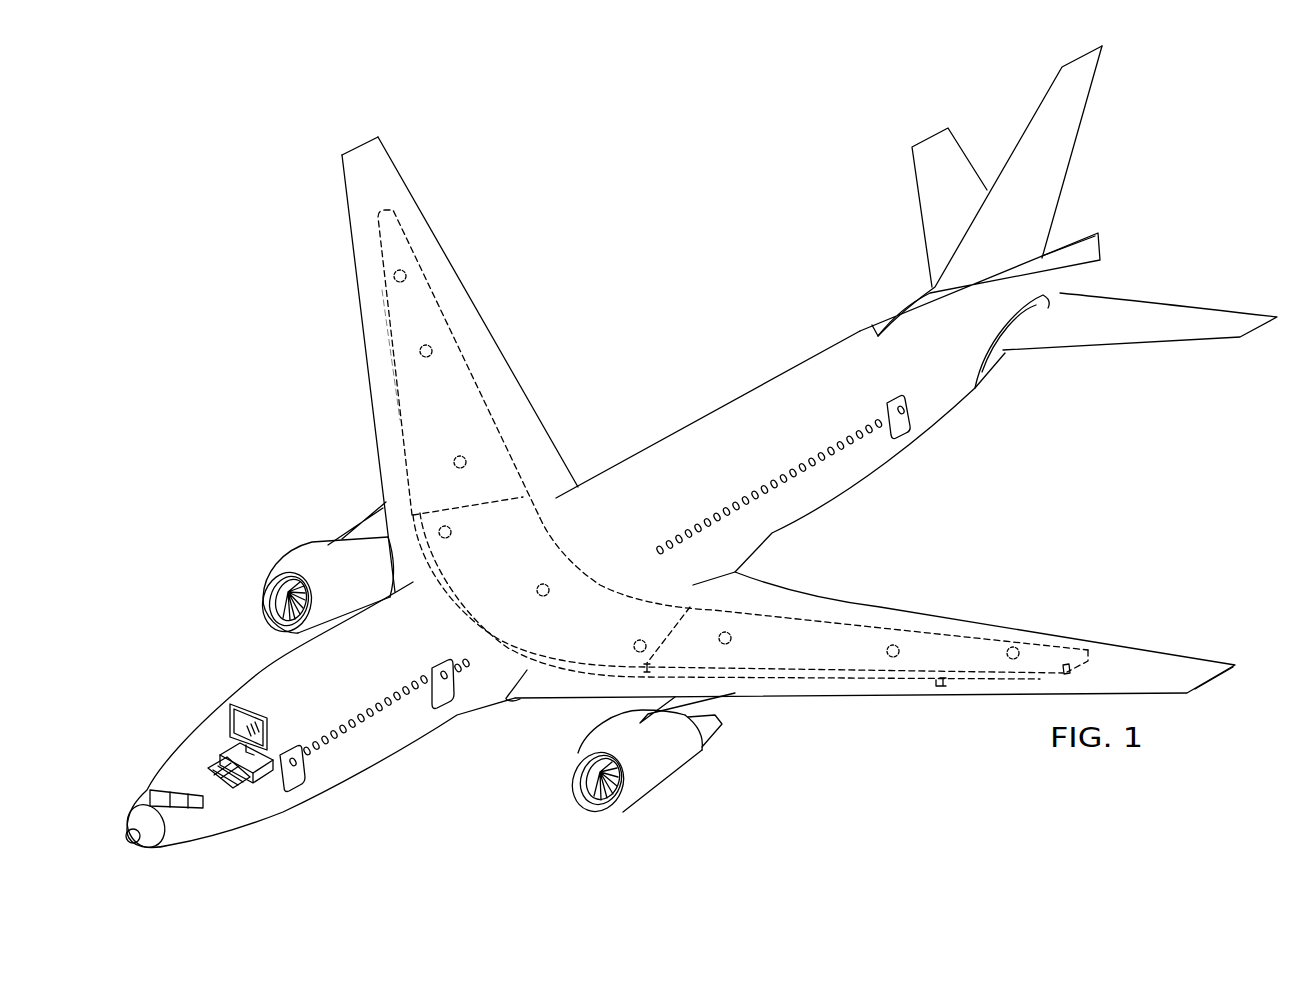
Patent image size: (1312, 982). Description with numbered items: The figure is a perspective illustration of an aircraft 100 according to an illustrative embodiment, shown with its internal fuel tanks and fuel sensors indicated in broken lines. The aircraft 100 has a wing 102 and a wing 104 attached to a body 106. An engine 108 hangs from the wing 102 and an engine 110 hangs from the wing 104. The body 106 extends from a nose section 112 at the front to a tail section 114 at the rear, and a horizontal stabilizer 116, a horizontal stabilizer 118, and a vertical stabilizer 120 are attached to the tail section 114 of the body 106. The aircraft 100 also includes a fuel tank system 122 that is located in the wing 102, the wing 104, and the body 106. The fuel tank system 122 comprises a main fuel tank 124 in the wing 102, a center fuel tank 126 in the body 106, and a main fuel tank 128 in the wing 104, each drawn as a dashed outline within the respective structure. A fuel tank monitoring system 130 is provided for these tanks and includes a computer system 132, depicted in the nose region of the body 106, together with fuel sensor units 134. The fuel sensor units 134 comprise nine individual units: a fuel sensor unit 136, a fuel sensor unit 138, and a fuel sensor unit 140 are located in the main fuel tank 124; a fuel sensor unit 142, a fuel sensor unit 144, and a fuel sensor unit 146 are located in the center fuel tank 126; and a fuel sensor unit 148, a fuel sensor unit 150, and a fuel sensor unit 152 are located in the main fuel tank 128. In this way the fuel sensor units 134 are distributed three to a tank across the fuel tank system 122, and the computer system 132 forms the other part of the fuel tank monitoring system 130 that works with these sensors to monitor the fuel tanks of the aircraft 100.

The aircraft 100 is at (192, 603).
The wing 102 is at (357, 145).
The wing 104 is at (1192, 660).
The body 106 is at (770, 373).
The engine 108 is at (300, 547).
The engine 110 is at (660, 798).
The nose section 112 is at (197, 722).
The tail section 114 is at (1148, 160).
The horizontal stabilizer 116 is at (925, 133).
The horizontal stabilizer 118 is at (1213, 305).
The vertical stabilizer 120 is at (1040, 100).
The fuel tank system 122 is at (300, 250).
The main fuel tank 124 is at (441, 327).
The center fuel tank 126 is at (584, 575).
The main fuel tank 128 is at (922, 630).
The fuel tank monitoring system 130 is at (347, 328).
The computer system 132 is at (273, 712).
The fuel sensor units 134 is at (480, 463).
The fuel sensor unit 136 is at (403, 268).
The fuel sensor unit 138 is at (421, 357).
The fuel sensor unit 140 is at (456, 455).
The fuel sensor unit 142 is at (451, 531).
The fuel sensor unit 144 is at (537, 589).
The fuel sensor unit 146 is at (635, 642).
The fuel sensor unit 148 is at (731, 635).
The fuel sensor unit 150 is at (887, 649).
The fuel sensor unit 152 is at (1007, 652).